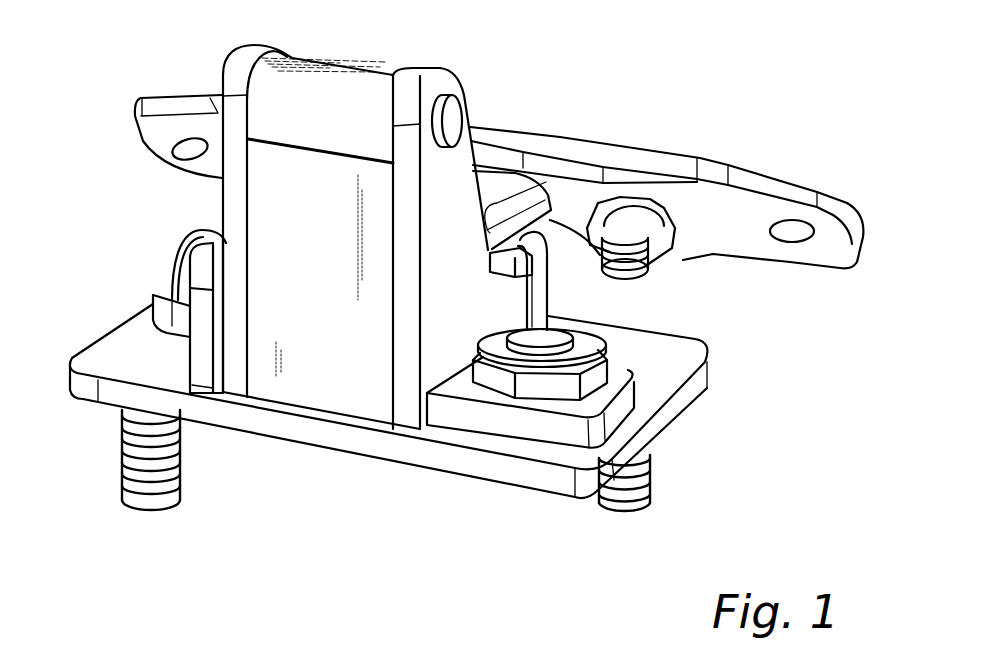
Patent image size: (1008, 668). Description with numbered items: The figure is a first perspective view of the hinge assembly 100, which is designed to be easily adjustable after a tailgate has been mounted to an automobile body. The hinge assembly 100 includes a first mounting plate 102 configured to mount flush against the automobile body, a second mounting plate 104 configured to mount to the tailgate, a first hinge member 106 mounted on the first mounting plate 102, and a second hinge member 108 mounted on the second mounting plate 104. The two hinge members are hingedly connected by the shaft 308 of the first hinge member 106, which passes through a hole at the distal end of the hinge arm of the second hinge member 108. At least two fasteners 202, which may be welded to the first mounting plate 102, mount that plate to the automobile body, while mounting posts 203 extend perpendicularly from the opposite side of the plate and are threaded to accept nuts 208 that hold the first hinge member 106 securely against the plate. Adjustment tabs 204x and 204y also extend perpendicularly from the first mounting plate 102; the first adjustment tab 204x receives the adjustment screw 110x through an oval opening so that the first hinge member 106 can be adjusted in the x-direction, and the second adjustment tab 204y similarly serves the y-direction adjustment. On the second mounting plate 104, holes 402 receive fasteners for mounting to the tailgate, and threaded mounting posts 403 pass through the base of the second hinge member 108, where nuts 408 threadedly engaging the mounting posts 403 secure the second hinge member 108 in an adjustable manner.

The hinge assembly 100 is at (728, 108).
The first mounting plate 102 is at (370, 448).
The second mounting plate 104 is at (681, 214).
The first hinge member 106 is at (233, 203).
The second hinge member 108 is at (568, 188).
The adjustment screw 110x is at (177, 278).
The fasteners 202 is at (652, 470).
The mounting posts 203 is at (542, 338).
The first adjustment tab 204x is at (205, 365).
The second adjustment tab 204y is at (543, 305).
The nuts 208 is at (615, 412).
The shaft 308 is at (450, 117).
The holes 402 is at (790, 238).
The threaded mounting posts 403 is at (615, 267).
The nuts 408 is at (655, 228).